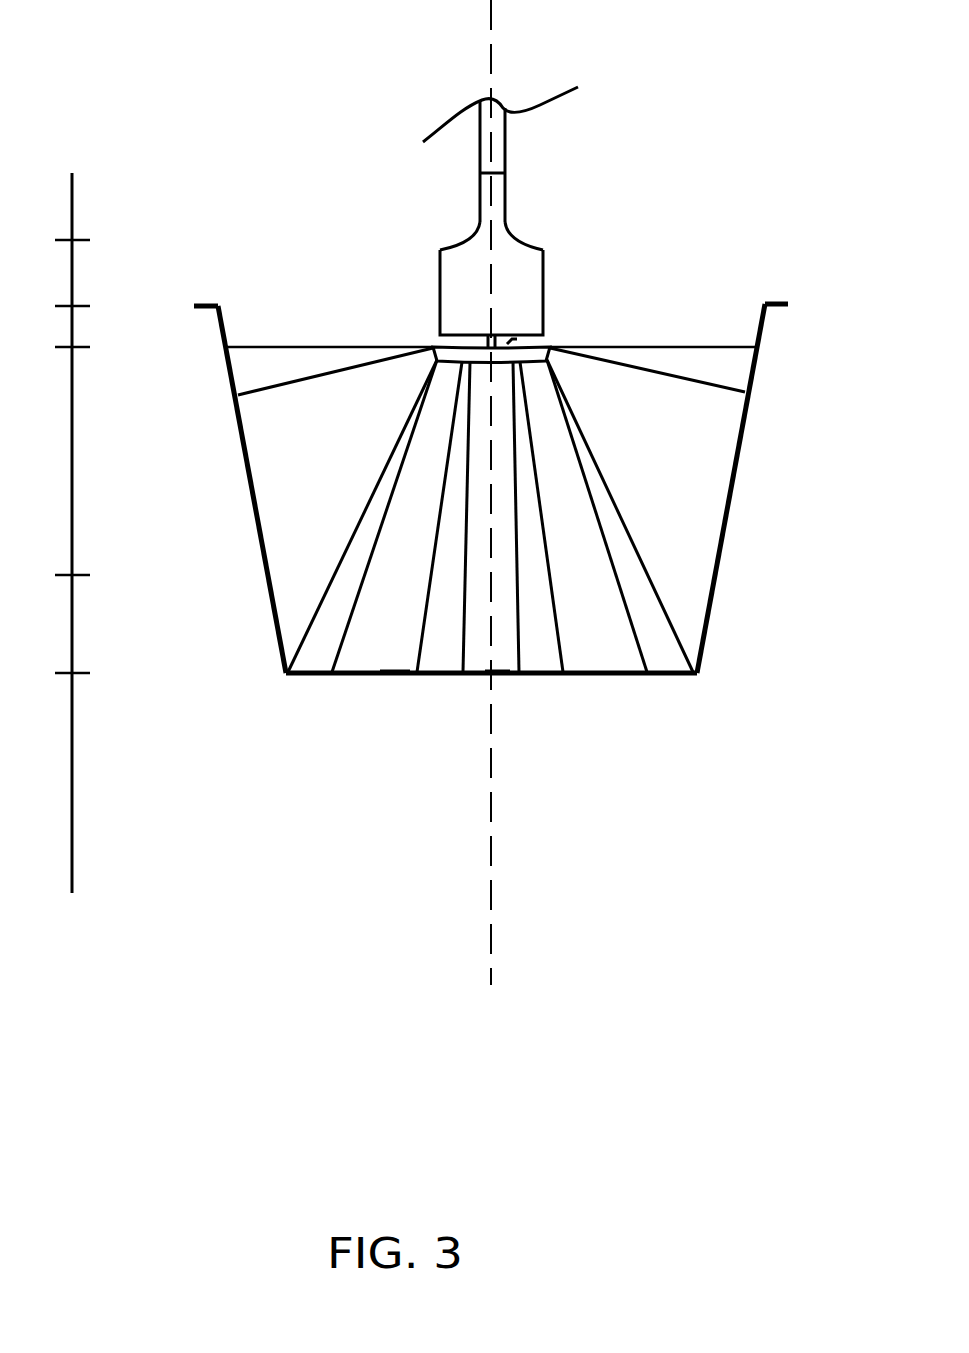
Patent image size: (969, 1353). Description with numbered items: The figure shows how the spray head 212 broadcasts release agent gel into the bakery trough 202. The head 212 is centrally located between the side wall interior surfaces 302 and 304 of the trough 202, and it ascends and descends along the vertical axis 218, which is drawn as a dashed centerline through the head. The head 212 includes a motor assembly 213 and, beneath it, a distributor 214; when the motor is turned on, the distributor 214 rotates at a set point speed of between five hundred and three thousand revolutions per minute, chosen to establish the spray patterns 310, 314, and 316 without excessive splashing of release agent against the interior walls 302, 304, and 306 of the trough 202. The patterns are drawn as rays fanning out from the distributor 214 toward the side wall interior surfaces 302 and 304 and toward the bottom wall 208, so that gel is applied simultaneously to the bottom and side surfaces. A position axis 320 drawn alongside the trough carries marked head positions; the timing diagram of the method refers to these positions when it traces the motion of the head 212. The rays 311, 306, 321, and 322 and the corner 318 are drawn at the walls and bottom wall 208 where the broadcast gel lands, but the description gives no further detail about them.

The bakery trough 202 is at (531, 493).
The bottom wall 208 is at (613, 678).
The spray head 212 is at (535, 242).
The motor assembly 213 is at (543, 272).
The distributor 214 is at (548, 346).
The vertical axis 218 is at (493, 12).
The side wall interior surface 302 is at (247, 452).
The side wall interior surface 304 is at (737, 452).
The interior wall 306 is at (554, 665).
The spray pattern 310 is at (292, 373).
The light ray 311 is at (755, 345).
The spray pattern 314 is at (350, 583).
The spray pattern 316 is at (460, 570).
The reflector corner 318 is at (287, 660).
The position axis 320 is at (72, 185).
The bottom point 321 is at (398, 665).
The bottom point 322 is at (497, 664).